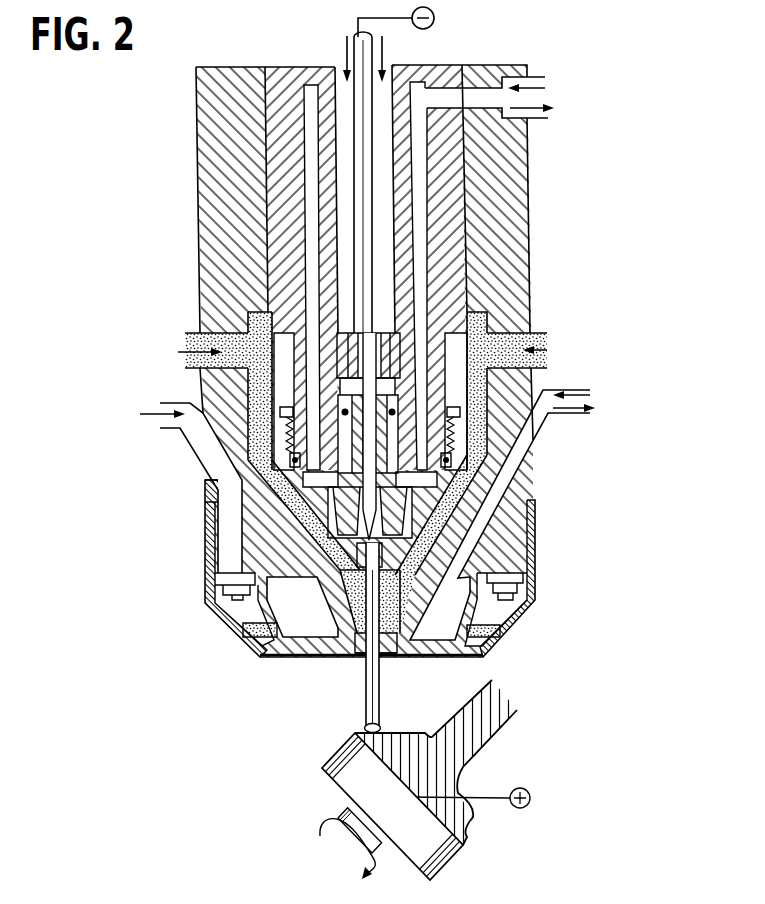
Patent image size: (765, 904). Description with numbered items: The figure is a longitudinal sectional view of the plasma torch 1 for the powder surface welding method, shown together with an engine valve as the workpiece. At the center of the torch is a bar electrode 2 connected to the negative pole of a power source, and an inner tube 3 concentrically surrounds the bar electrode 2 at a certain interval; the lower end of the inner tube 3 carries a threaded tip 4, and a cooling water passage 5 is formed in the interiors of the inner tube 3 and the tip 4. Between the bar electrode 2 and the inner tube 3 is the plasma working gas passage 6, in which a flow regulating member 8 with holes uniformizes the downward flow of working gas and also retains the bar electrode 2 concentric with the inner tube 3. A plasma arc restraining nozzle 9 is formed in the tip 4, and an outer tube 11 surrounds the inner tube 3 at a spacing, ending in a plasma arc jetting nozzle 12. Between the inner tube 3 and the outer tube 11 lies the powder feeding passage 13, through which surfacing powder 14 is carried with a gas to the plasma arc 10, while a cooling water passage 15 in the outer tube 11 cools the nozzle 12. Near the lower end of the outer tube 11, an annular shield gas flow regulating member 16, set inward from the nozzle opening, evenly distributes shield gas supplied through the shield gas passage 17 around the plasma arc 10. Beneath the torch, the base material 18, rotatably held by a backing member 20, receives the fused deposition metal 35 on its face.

The plasma torch 1 is at (496, 64).
The bar electrode 2 is at (360, 75).
The inner tube 3 is at (407, 230).
The tip 4 is at (427, 517).
The cooling water passage 5 is at (422, 387).
The plasma working gas passage 6 is at (380, 172).
The flow regulating member 8 is at (342, 330).
The plasma arc restraining nozzle 9 is at (360, 567).
The plasma arc 10 is at (367, 613).
The outer tube 11 is at (515, 292).
The plasma arc jetting nozzle 12 is at (363, 653).
The powder feeding passage 13 is at (480, 448).
The surfacing powder 14 is at (293, 513).
The cooling water passage 15 is at (463, 600).
The shield gas flow regulating member 16 is at (500, 632).
The shield gas passage 17 is at (250, 620).
The base material 18 is at (452, 768).
The backing member 20 is at (452, 866).
The fused deposition metal 35 is at (362, 727).